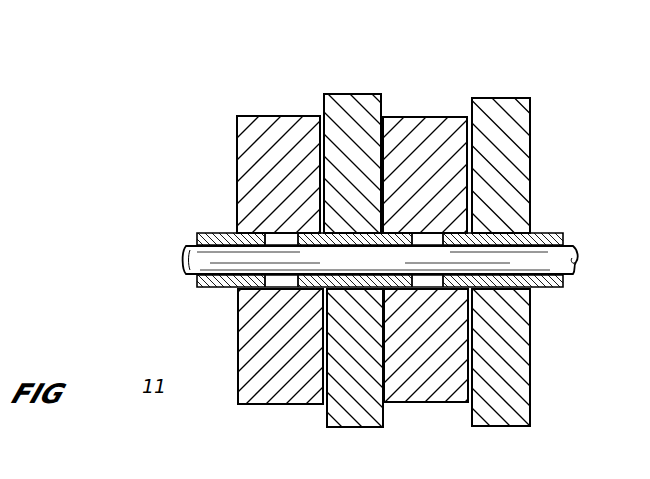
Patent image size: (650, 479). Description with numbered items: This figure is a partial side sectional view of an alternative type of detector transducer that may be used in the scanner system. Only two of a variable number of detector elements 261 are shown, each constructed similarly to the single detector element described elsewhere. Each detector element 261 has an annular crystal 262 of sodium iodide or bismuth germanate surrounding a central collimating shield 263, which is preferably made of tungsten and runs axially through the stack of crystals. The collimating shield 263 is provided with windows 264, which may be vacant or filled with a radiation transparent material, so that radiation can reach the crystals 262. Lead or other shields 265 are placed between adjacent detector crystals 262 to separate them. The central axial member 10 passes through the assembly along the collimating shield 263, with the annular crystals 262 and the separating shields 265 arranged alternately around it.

The shaft 10 is at (182, 263).
The detector elements 261 is at (277, 114).
The annular crystals 262 is at (247, 165).
The collimating shield 263 is at (538, 233).
The windows 264 is at (284, 281).
The shields 265 is at (352, 103).